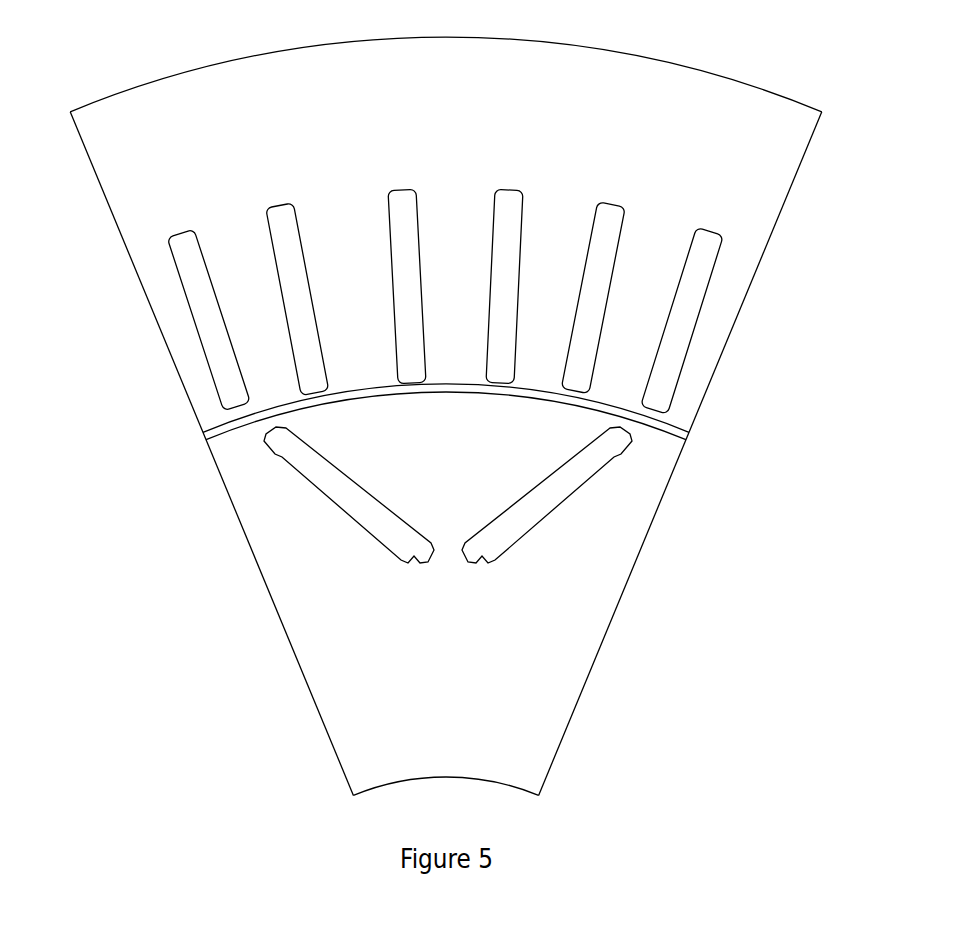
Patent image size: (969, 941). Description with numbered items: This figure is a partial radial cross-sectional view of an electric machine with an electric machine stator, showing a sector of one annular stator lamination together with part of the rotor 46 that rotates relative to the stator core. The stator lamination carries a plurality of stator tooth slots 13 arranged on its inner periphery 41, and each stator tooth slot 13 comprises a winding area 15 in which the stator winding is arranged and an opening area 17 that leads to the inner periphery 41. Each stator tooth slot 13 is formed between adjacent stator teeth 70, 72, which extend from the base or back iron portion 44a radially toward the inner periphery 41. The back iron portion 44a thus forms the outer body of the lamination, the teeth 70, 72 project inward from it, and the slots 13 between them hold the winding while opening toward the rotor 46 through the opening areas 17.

The back iron portion 44a is at (765, 142).
The rotor 46 is at (563, 680).
The inner periphery 41 is at (495, 440).
The opening area 17 is at (655, 413).
The stator tooth slot 13 is at (734, 320).
The winding area 15 is at (734, 320).
The stator tooth 70 is at (644, 338).
The stator tooth 72 is at (718, 348).